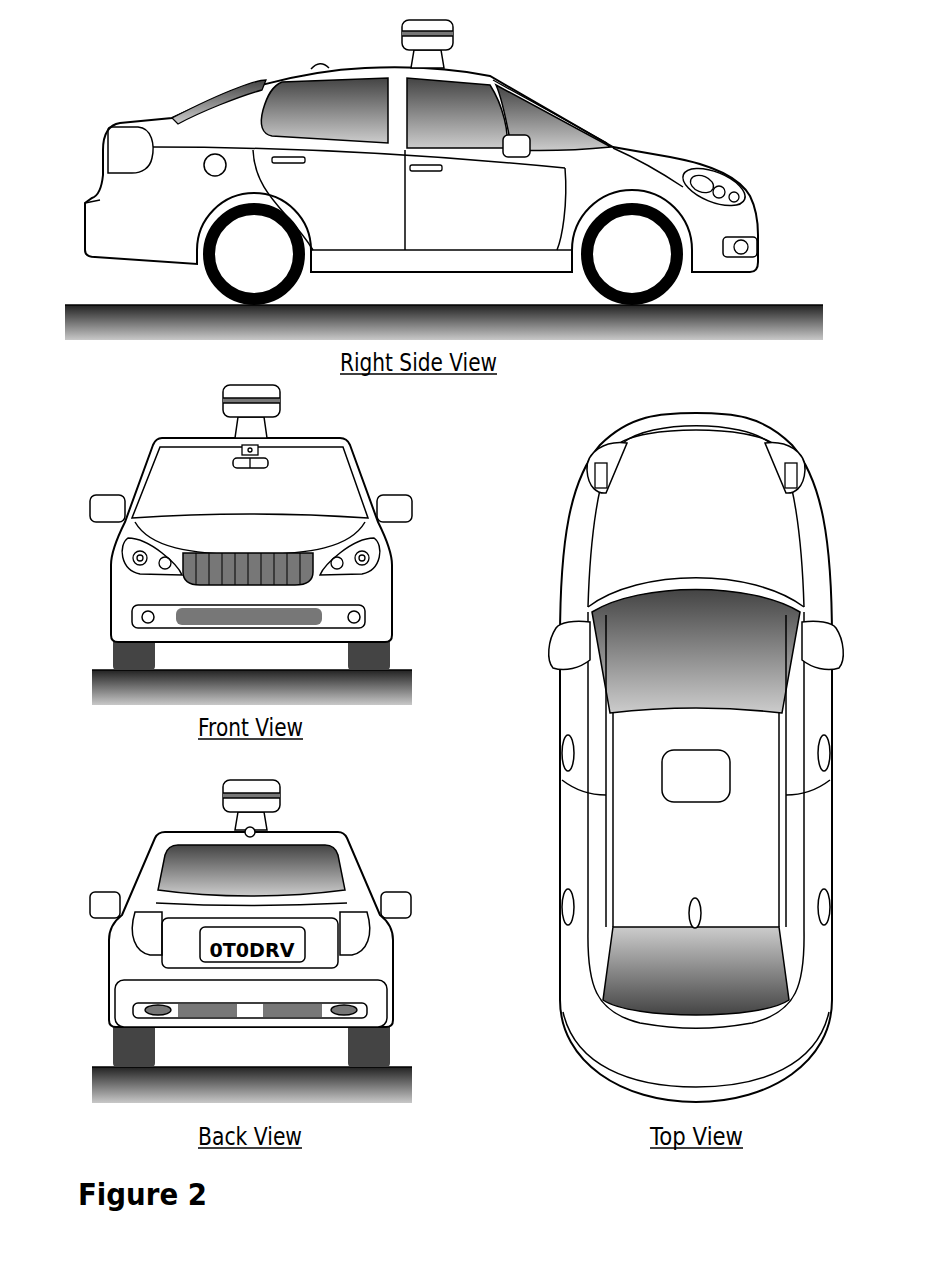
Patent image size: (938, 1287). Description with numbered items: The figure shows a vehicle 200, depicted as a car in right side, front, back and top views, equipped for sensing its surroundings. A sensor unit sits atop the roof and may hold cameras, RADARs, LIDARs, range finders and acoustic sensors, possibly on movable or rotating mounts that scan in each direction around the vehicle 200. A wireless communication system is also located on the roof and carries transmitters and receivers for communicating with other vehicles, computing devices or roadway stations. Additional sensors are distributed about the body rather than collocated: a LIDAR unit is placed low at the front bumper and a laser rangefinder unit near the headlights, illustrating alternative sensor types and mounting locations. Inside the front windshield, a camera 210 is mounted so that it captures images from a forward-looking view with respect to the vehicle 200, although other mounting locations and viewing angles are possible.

The vehicle 200 is at (76, 111).
The camera 210 is at (262, 452).